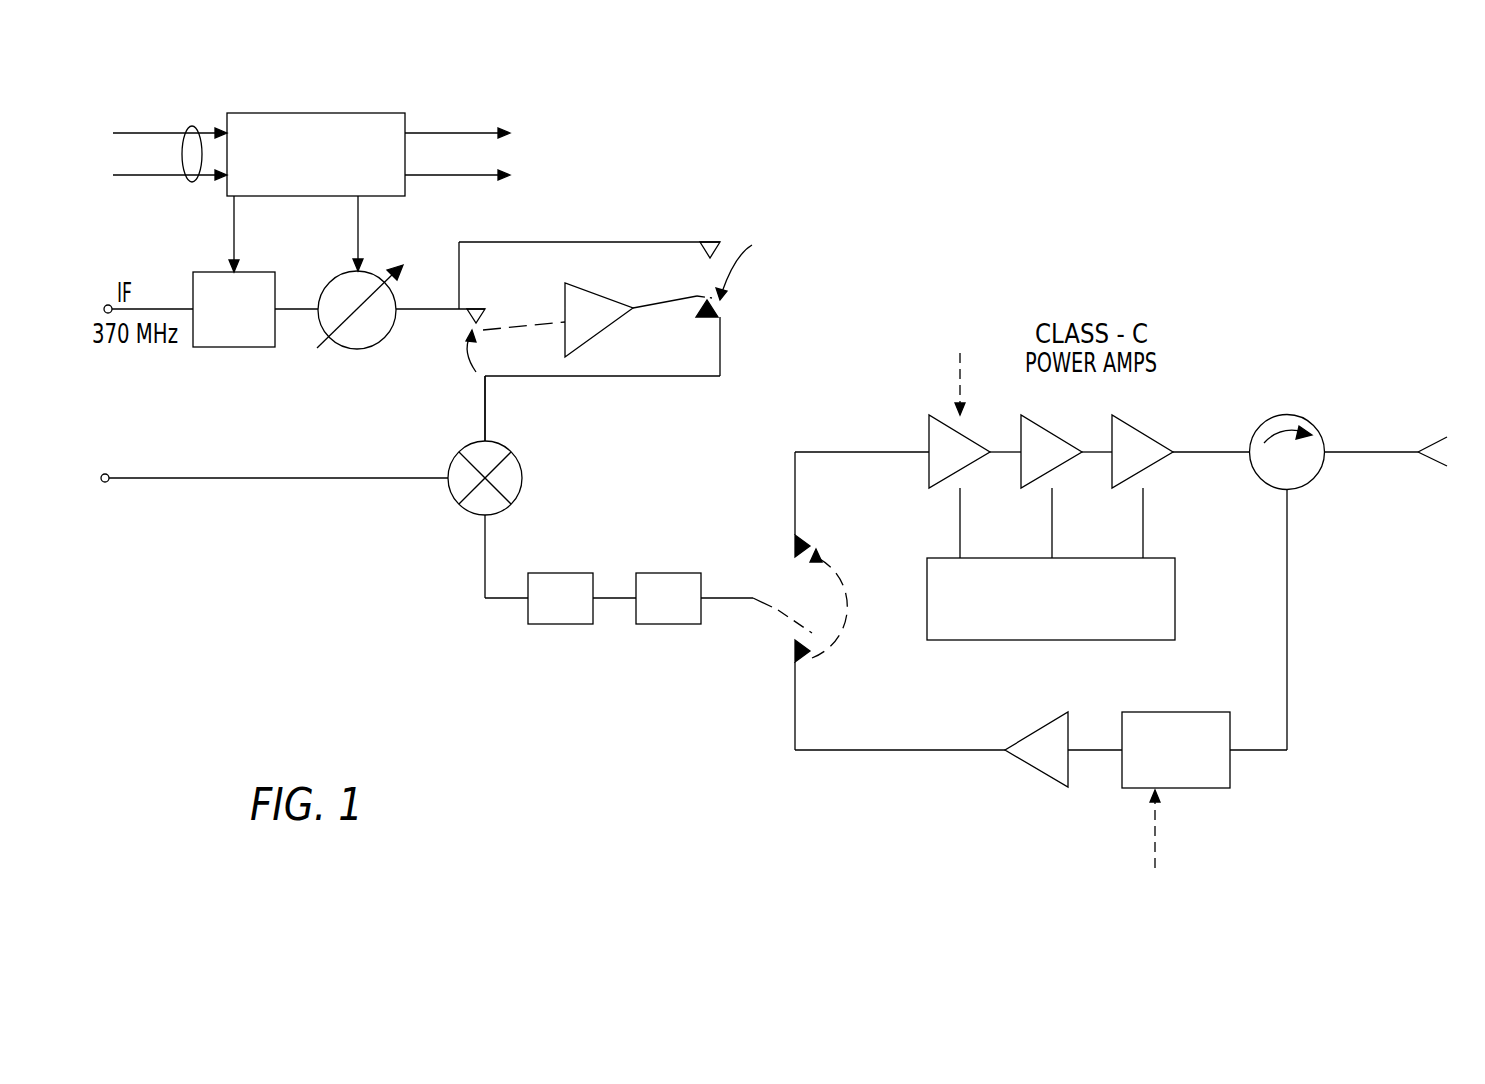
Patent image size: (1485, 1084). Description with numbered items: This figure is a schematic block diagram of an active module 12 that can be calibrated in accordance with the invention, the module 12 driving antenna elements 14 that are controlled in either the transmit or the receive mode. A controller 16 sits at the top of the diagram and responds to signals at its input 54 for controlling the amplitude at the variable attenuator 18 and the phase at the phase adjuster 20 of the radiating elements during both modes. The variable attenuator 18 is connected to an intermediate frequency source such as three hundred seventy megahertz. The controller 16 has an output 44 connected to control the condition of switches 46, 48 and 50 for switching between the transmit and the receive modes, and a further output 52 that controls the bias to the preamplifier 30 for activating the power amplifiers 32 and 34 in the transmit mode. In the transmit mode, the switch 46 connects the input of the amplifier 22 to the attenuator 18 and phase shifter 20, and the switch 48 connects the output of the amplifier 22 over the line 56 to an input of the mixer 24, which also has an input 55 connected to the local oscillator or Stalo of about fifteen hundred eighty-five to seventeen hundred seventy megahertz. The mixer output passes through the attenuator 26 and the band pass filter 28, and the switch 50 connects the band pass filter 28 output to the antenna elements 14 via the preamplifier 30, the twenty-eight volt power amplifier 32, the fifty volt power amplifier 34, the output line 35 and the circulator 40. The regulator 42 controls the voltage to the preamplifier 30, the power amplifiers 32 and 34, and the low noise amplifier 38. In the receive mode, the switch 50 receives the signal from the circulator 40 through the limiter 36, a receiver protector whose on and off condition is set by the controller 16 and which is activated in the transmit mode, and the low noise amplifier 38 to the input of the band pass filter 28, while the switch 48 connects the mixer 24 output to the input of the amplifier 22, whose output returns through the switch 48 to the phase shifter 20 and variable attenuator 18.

The module 12 is at (631, 761).
The antenna elements 14 is at (1368, 455).
The controller 16 is at (308, 113).
The variable attenuator 18 is at (241, 348).
The phase adjuster 20 is at (341, 350).
The amplifier 22 is at (603, 293).
The mixer 24 is at (522, 464).
The attenuator 26 is at (553, 572).
The band pass filter 28 is at (660, 572).
The preamplifier 30 is at (928, 465).
The 28 volt power amplifier 32 is at (1042, 426).
The 50 volt power amplifier 34 is at (1133, 426).
The output line 35 is at (1212, 448).
The limiter 36 is at (1172, 712).
The low noise amplifier 38 is at (1040, 777).
The circulator 40 is at (1284, 418).
The regulator 42 is at (1175, 598).
The output 44 is at (482, 177).
The switch 46 is at (478, 343).
The switch 48 is at (747, 268).
The switch 50 is at (790, 628).
The output 52 is at (486, 130).
The input 54 is at (193, 128).
The output 55 is at (331, 480).
The line 56 is at (486, 393).